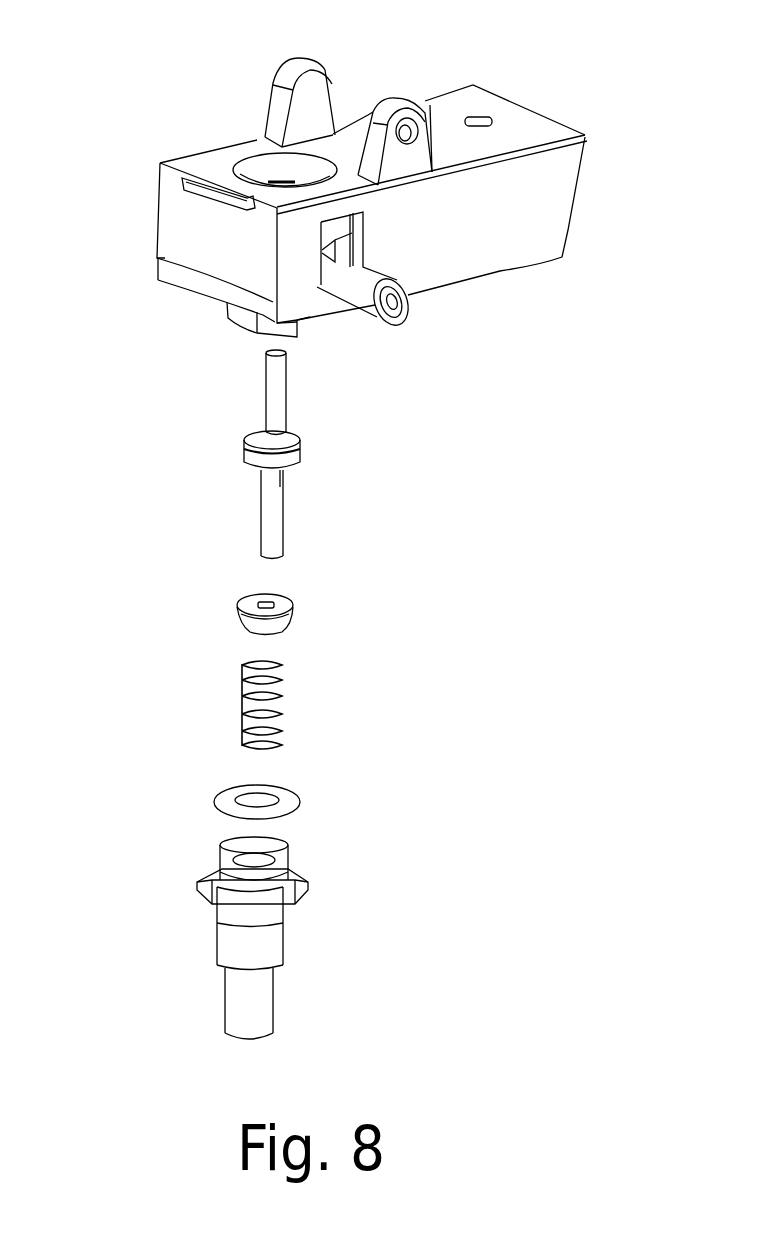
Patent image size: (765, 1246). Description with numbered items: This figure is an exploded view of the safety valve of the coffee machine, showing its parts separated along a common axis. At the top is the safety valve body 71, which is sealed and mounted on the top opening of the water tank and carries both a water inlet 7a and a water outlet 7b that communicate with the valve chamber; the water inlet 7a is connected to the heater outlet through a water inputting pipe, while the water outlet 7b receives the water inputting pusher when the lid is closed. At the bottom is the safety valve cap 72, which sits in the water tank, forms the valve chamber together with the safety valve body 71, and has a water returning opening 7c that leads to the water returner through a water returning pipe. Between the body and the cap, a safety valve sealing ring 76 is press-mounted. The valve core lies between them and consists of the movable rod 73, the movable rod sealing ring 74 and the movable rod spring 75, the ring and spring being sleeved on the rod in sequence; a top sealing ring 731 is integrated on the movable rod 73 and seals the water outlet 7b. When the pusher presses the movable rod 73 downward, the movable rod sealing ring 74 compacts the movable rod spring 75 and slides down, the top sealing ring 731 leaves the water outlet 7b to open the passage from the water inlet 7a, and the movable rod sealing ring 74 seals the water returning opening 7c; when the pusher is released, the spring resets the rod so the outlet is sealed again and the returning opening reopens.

The safety valve body 71 is at (500, 135).
The water inlet 7a is at (408, 313).
The water outlet 7b is at (280, 178).
The water returning opening 7c is at (220, 865).
The safety valve cap 72 is at (221, 917).
The movable rod 73 is at (263, 500).
The top sealing ring 731 is at (248, 445).
The movable rod sealing ring 74 is at (295, 617).
The movable rod spring 75 is at (250, 712).
The safety valve sealing ring 76 is at (298, 800).